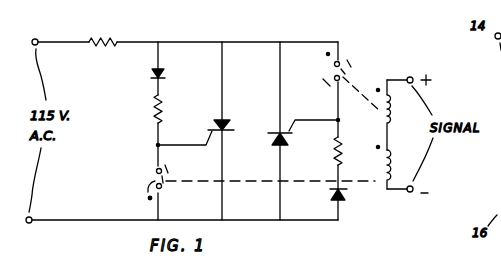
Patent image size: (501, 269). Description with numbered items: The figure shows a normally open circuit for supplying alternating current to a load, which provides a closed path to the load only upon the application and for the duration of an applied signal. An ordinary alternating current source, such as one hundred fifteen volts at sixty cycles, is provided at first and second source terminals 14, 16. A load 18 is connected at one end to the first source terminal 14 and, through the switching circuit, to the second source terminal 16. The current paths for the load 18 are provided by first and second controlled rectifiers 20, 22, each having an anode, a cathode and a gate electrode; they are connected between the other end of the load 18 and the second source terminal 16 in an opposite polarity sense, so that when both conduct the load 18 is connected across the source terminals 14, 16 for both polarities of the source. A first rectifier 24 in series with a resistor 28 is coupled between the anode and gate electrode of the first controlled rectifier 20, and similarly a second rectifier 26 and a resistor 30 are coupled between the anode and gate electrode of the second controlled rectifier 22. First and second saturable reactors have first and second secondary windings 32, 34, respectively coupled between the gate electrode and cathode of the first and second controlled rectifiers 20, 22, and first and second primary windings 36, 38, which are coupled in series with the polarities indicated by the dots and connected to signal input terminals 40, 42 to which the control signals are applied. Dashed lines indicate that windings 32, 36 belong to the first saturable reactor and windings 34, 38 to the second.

The first source terminal 14 is at (33, 40).
The second source terminal 16 is at (26, 228).
The load 18 is at (115, 33).
The first controlled rectifier 20 is at (216, 123).
The second controlled rectifier 22 is at (271, 141).
The first rectifier 24 is at (166, 74).
The second rectifier 26 is at (346, 198).
The resistor 28 is at (152, 112).
The resistor 30 is at (333, 151).
The first secondary winding 32 is at (152, 171).
The second secondary winding 34 is at (330, 67).
The first primary winding 36 is at (392, 162).
The second primary winding 38 is at (391, 120).
The signal input terminal 40 is at (412, 77).
The signal input terminal 42 is at (416, 187).